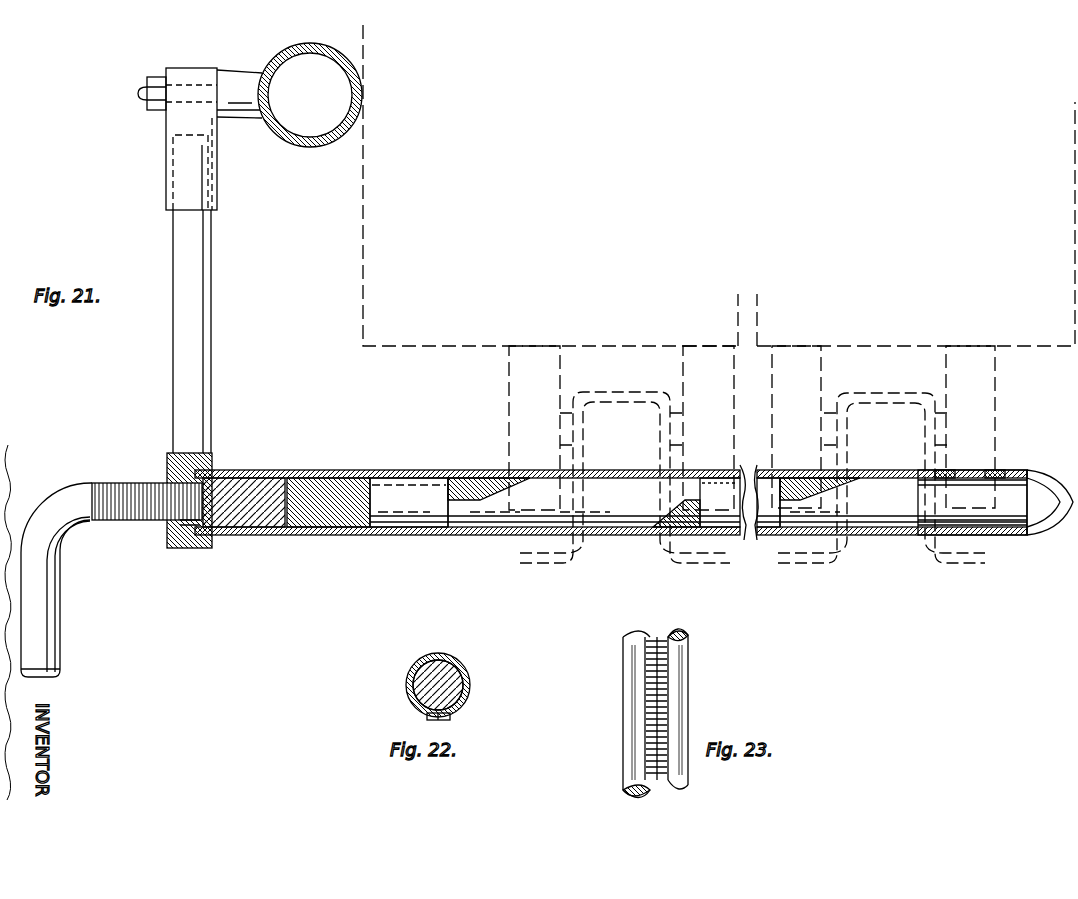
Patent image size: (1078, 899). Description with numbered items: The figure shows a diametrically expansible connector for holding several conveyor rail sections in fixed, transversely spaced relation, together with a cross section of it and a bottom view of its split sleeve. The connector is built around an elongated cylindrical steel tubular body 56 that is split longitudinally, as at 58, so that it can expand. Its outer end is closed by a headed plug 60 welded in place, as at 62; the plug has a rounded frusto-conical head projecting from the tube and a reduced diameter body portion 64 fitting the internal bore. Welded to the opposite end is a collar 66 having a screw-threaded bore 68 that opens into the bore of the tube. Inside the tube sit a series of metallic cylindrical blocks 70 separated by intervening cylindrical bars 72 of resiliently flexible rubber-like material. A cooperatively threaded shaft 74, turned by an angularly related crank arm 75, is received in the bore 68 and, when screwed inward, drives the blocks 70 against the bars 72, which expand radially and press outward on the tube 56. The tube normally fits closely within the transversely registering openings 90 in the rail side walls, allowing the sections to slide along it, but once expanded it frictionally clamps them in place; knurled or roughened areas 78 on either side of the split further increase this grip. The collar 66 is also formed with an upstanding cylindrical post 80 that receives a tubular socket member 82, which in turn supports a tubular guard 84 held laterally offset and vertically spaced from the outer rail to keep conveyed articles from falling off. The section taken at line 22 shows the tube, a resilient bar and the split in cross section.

In FIG. 21, the section line 22- 22 is at (327, 555).
In FIG. 21, the tubular body 56 is at (372, 470).
In FIG. 22, the tubular body 56 is at (470, 693).
In FIG. 23, the tubular body 56 is at (632, 670).
In FIG. 21, the longitudinal split 58 is at (493, 532).
In FIG. 22, the longitudinal split 58 is at (452, 717).
In FIG. 23, the longitudinal split 58 is at (660, 702).
In FIG. 21, the headed plug 60 is at (1045, 512).
In FIG. 21, the weld 62 is at (995, 470).
In FIG. 21, the reduced diameter body portion 64 is at (1005, 512).
In FIG. 21, the collar 66 is at (185, 550).
In FIG. 21, the screw-threaded bore 68 is at (180, 525).
In FIG. 21, the metallic cylindrical blocks 70 is at (247, 510).
In FIG. 21, the cylindrical bars 72 is at (323, 490).
In FIG. 22, the cylindrical bars 72 is at (445, 673).
In FIG. 21, the screw-threaded shaft 74 is at (115, 483).
In FIG. 21, the L-shaped handle 75 is at (47, 615).
In FIG. 23, the knurled areas 78 is at (660, 673).
In FIG. 21, the cylindrical post 80 is at (197, 307).
In FIG. 21, the tubular socket member 82 is at (217, 157).
In FIG. 21, the tubular guard 84 is at (263, 57).
In FIG. 21, the openings 90 is at (660, 467).